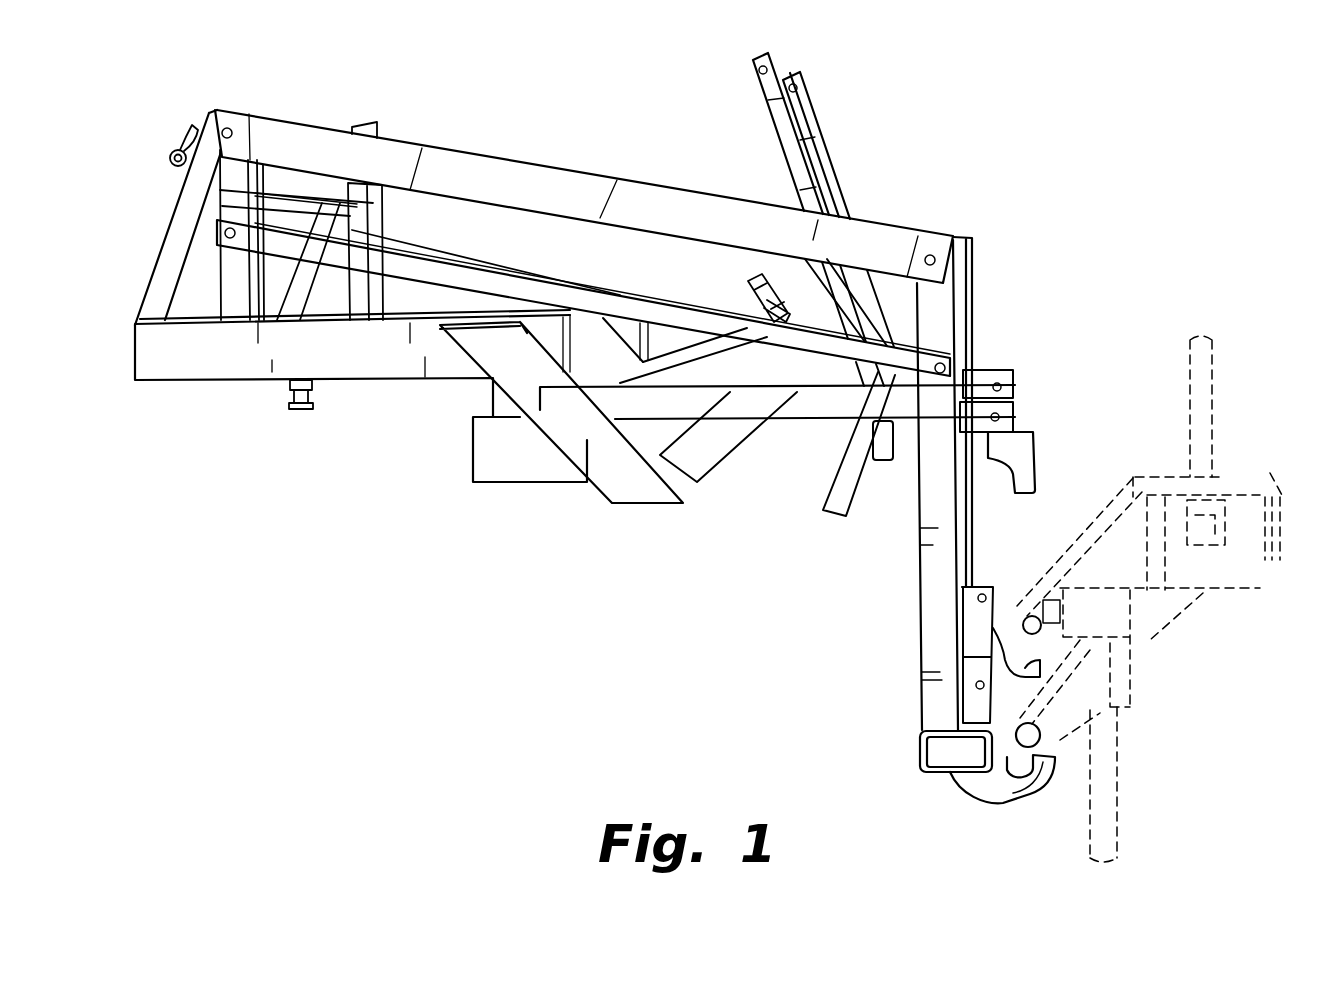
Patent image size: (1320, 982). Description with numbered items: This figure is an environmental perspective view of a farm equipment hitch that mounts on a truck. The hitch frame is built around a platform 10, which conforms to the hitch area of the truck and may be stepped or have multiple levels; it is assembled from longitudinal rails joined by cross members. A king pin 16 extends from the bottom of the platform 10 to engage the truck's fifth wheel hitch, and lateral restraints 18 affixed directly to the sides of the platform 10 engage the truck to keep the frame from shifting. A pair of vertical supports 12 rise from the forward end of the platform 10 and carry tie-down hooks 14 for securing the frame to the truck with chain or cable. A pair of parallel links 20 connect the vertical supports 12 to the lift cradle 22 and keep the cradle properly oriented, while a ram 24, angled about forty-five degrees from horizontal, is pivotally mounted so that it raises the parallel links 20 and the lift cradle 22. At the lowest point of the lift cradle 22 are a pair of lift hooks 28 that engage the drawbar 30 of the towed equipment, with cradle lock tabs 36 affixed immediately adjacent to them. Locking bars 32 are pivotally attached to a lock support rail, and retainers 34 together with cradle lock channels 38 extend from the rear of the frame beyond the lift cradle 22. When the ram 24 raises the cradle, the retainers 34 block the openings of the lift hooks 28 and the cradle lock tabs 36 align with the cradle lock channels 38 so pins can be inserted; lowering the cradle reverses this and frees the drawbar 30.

The platform 10 is at (472, 443).
The vertical supports 12 is at (167, 248).
The tie-down hooks 14 is at (174, 151).
The king pin 16 is at (300, 410).
The lateral restraints 18 is at (627, 487).
The parallel links 20 is at (580, 184).
The lift cradle 22 is at (950, 300).
The ram 24 is at (717, 313).
The lift hooks 28 is at (1013, 803).
The drawbar 30 is at (1117, 677).
The locking bars 32 is at (822, 128).
The retainers 34 is at (1040, 480).
The cradle lock tabs 36 is at (973, 707).
The cradle lock channels 38 is at (1013, 384).